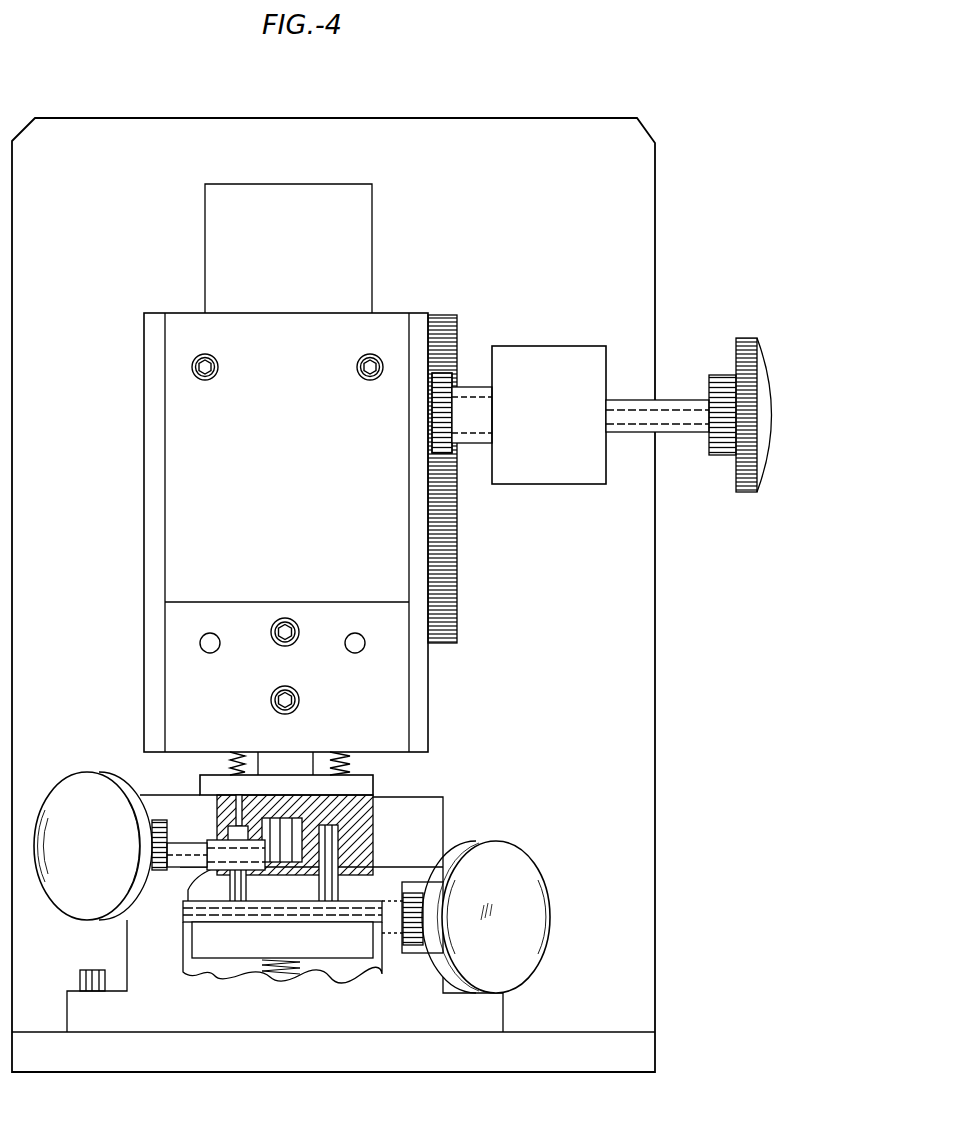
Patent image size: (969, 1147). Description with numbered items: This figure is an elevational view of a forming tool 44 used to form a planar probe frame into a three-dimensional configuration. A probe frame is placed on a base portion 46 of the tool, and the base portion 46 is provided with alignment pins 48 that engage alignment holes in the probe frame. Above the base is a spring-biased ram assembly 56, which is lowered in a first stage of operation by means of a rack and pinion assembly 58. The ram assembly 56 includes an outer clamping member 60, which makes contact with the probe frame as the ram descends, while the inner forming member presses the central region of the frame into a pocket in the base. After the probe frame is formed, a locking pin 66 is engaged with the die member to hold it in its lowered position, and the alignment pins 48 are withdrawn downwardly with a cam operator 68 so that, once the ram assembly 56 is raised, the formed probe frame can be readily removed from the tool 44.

The forming tool 44 is at (655, 272).
The base portion 46 is at (445, 840).
The alignment pins 48 is at (345, 825).
The spring-biased ram assembly 56 is at (164, 745).
The rack and pinion assembly 58 is at (467, 443).
The outer clamping member 60 is at (203, 787).
The locking pin 66 is at (212, 845).
The cam operator 68 is at (348, 916).